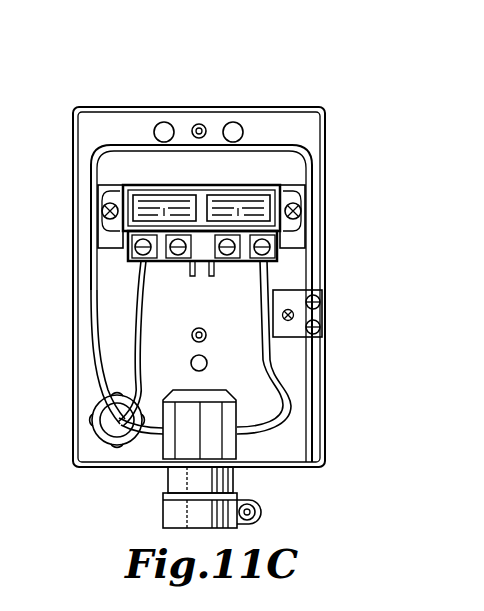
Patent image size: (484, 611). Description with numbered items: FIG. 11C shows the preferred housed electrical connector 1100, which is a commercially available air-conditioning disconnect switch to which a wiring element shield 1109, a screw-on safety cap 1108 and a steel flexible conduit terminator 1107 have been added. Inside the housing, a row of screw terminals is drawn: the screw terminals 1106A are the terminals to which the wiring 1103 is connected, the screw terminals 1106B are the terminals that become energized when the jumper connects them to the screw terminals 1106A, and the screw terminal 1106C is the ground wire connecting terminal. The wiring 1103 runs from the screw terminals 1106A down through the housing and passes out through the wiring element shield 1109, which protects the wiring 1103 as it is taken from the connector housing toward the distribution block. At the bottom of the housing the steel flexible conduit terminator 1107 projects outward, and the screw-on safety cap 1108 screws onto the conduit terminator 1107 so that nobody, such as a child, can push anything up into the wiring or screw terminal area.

The housed electrical connector 1100 is at (155, 102).
The wiring 1103 is at (130, 337).
The screw terminals 1106A is at (261, 236).
The screw terminals 1106B is at (227, 262).
The screw terminal 1106C is at (323, 310).
The steel flexible conduit terminator 1107 is at (163, 508).
The screw-on safety cap 1108 is at (236, 443).
The wiring element shield 1109 is at (117, 451).